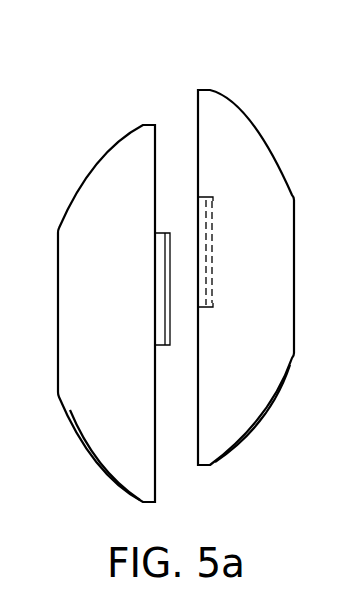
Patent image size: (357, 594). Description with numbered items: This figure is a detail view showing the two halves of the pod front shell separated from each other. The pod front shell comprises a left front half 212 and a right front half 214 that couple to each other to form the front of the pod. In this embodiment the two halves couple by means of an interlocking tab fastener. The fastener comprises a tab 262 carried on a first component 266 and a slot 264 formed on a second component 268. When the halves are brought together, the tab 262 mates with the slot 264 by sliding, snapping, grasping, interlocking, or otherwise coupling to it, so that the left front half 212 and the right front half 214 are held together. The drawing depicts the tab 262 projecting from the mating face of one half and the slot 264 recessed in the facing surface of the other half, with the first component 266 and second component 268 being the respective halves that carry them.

The left front half 212 is at (248, 122).
The right front half 214 is at (102, 164).
The tab 262 is at (165, 347).
The slot 264 is at (200, 222).
The first component 266 is at (88, 452).
The second component 268 is at (277, 397).